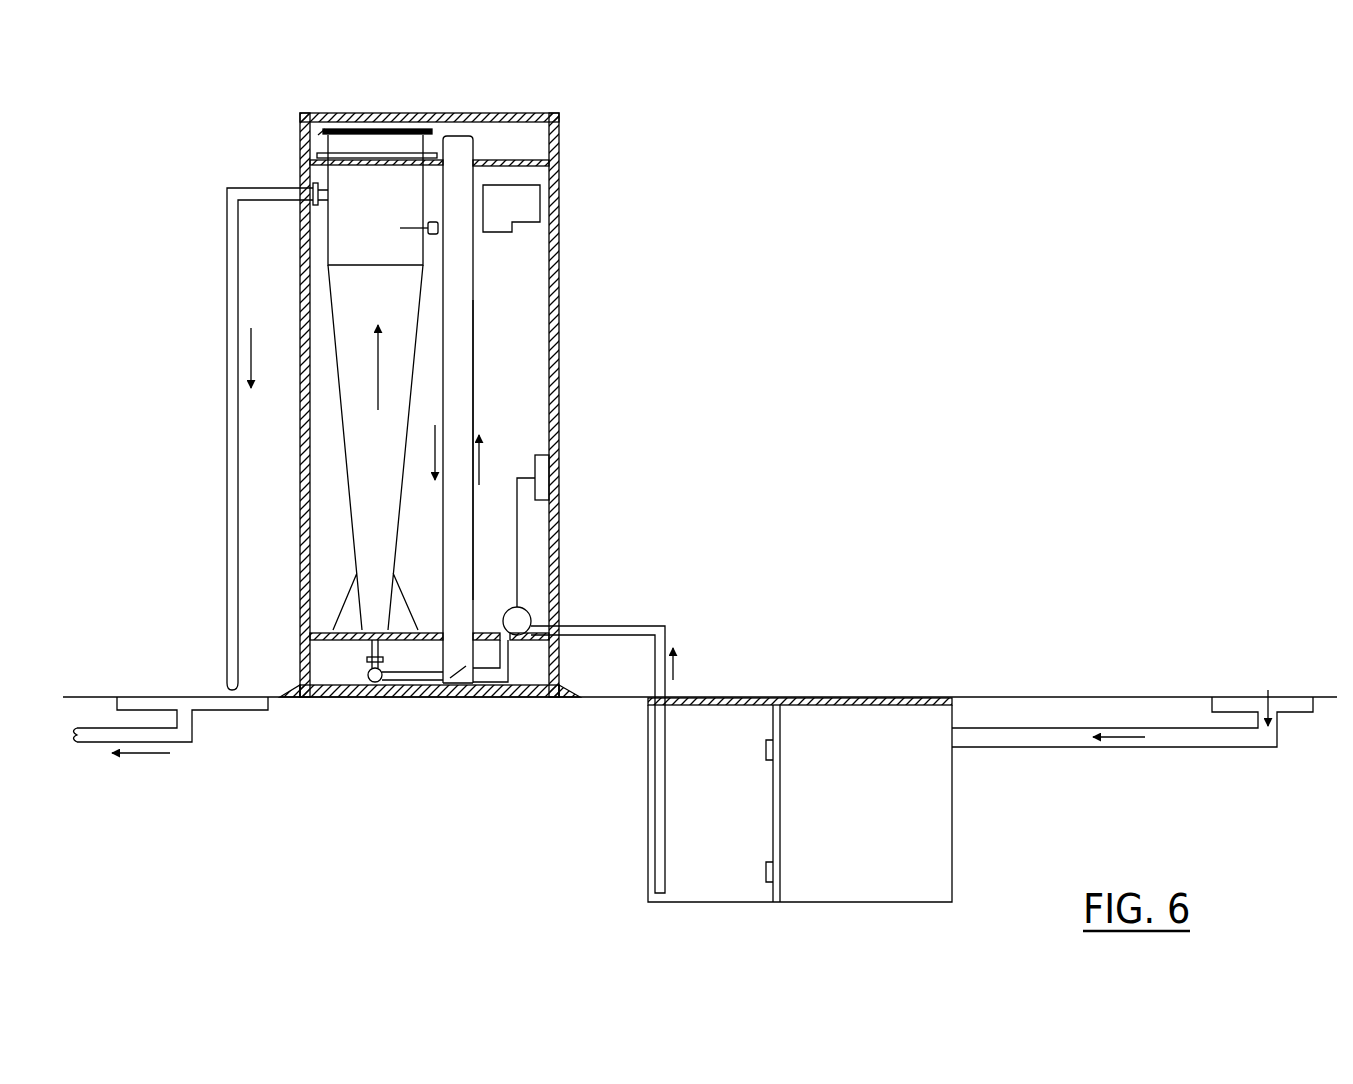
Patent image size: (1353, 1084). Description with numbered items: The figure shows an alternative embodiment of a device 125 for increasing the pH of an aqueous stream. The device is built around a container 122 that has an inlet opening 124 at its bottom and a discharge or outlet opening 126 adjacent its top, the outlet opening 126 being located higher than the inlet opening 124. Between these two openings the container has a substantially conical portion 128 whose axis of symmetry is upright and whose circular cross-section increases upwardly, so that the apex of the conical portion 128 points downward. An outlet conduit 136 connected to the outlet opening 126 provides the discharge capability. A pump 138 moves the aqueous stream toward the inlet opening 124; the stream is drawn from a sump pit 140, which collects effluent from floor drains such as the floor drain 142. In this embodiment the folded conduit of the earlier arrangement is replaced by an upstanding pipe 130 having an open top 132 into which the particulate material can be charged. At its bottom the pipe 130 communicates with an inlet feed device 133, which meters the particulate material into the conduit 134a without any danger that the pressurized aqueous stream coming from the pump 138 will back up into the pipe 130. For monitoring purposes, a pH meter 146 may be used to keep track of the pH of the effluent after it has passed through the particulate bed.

The container 122 is at (493, 264).
The inlet opening 124 is at (368, 648).
The device for increasing the pH of an aqueous stream 125 is at (318, 251).
The outlet opening 126 is at (312, 207).
The conical portion 128 is at (487, 343).
The upstanding pipe 130 is at (497, 397).
The open top 132 is at (458, 145).
The inlet feed device 133 is at (463, 680).
The conduit 134a is at (423, 675).
The outlet conduit 136 is at (232, 381).
The pump 138 is at (582, 588).
The sump pit 140 is at (840, 723).
The floor drain 142 is at (1230, 702).
The pH meter 146 is at (583, 193).